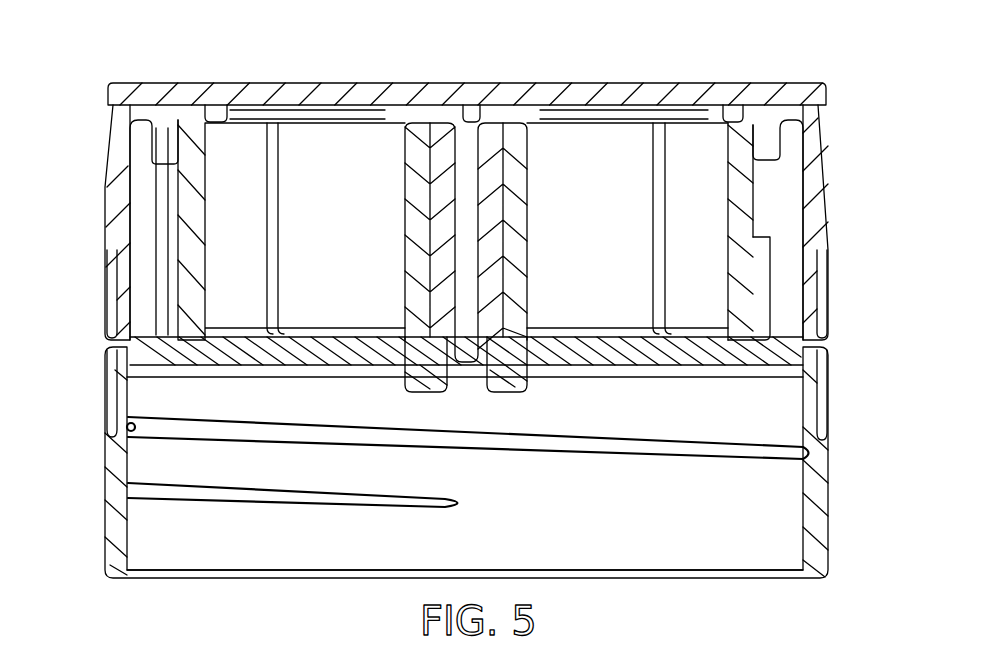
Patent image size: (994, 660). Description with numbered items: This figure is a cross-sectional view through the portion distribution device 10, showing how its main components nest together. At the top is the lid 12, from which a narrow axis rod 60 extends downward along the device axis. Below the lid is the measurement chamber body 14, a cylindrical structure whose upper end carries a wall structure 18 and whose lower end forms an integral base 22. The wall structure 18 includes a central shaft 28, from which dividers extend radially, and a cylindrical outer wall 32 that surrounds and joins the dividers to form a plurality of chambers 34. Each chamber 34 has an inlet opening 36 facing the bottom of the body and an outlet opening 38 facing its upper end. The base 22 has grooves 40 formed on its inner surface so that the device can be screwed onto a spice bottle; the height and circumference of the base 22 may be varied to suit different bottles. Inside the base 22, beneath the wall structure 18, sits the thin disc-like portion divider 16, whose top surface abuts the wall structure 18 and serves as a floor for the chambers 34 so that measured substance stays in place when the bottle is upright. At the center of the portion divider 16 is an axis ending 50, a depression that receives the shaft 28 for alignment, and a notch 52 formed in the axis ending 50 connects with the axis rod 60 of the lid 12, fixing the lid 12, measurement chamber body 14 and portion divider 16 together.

The portion distribution device 10 is at (808, 45).
The lid 12 is at (145, 42).
The measurement chamber body 14 is at (90, 408).
The portion divider 16 is at (580, 348).
The wall structure 18 is at (772, 205).
The base 22 is at (818, 485).
The shaft 28 is at (515, 183).
The cylindrical outer wall 32 is at (197, 143).
The chambers 34 is at (355, 239).
The inlet opening 36 is at (620, 312).
The outlet opening 38 is at (580, 155).
The grooves 40 is at (527, 440).
The axis ending 50 is at (423, 382).
The notch 52 is at (467, 345).
The axis rod 60 is at (493, 128).